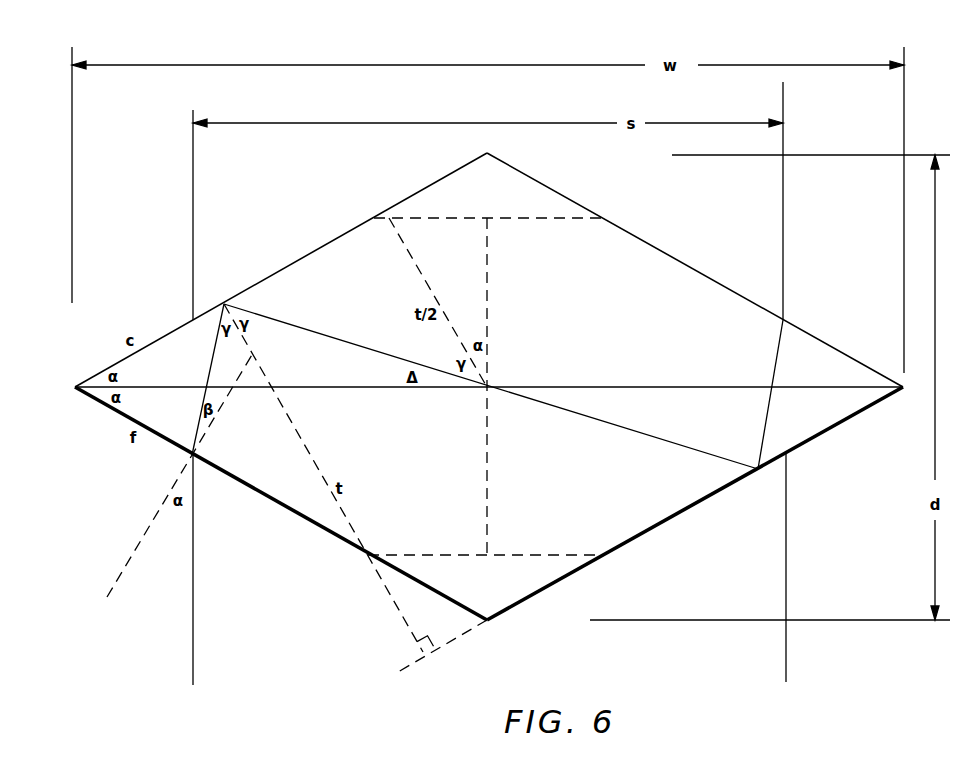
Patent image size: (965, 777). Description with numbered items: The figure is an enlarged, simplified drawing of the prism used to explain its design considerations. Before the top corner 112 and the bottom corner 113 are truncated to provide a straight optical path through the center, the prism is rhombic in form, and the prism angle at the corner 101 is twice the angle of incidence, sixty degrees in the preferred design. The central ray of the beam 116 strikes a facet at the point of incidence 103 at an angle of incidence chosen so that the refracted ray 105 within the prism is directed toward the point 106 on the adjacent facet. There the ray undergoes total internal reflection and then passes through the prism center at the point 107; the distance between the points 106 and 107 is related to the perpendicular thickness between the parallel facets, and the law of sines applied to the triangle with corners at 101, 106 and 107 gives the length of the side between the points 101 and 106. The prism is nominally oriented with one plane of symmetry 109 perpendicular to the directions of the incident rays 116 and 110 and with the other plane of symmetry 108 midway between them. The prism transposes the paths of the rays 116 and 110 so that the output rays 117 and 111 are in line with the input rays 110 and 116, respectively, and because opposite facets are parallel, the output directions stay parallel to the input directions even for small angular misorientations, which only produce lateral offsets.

The corner 101 is at (262, 275).
The point of incidence 103 is at (188, 458).
The refracted ray 105 is at (213, 348).
The point on adjacent facet 106 is at (224, 302).
The prism center 107 is at (487, 387).
The plane of symmetry 108 is at (490, 313).
The plane of symmetry 109 is at (648, 387).
The incident ray 110 is at (805, 567).
The output ray 111 is at (129, 175).
The top corner 112 is at (508, 203).
The bottom corner 113 is at (504, 592).
The beam 116 is at (223, 570).
The output ray 117 is at (794, 275).